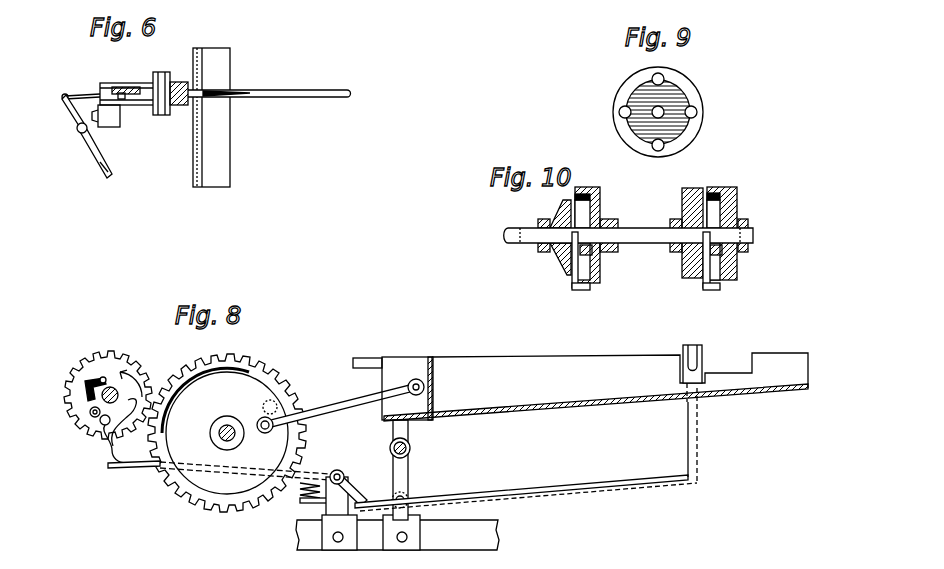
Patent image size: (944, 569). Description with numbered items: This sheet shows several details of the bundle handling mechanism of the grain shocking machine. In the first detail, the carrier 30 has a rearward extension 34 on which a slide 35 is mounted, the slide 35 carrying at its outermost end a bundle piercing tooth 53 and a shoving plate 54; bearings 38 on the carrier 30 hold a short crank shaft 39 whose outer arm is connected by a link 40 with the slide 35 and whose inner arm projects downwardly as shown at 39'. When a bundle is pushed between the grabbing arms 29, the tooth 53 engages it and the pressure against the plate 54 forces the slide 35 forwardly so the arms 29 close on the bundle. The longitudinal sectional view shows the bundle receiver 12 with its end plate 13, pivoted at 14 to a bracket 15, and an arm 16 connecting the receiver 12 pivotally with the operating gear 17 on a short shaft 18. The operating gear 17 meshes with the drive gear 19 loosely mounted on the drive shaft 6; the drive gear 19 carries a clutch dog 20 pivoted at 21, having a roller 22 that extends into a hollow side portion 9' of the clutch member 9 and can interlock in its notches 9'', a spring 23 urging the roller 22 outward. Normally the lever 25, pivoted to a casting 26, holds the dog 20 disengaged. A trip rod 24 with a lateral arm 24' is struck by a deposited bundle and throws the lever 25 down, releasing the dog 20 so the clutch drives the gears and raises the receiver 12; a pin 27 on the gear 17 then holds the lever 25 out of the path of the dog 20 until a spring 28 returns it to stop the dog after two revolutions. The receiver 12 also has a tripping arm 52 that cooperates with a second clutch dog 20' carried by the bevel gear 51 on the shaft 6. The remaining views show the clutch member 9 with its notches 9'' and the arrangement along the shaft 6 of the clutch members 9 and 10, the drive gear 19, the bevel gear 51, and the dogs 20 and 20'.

In FIG. 10, the drive shaft 6 is at (652, 244).
In FIG. 9, the clutch member 9 is at (675, 112).
In FIG. 10, the clutch member 9 is at (724, 215).
In FIG. 10, the hollow side portion 9' is at (754, 223).
In FIG. 9, the notches 9'' is at (682, 106).
In FIG. 10, the notches 9'' is at (715, 175).
In FIG. 10, the clutch member 10 is at (588, 187).
In FIG. 8, the bundle receiver 12 is at (522, 356).
In FIG. 8, the end plate 13 is at (434, 375).
In FIG. 8, the pivot 14 is at (411, 448).
In FIG. 8, the bracket 15 is at (409, 477).
In FIG. 8, the arm 16 is at (340, 406).
In FIG. 8, the operating gear 17 is at (255, 380).
In FIG. 8, the short shaft 18 is at (227, 424).
In FIG. 10, the drive gear 19 is at (695, 280).
In FIG. 8, the drive gear 19 is at (110, 371).
In FIG. 10, the clutch dog 20 is at (718, 273).
In FIG. 8, the clutch dog 20 is at (203, 479).
In FIG. 10, the second clutch dog 20' is at (587, 273).
In FIG. 8, the pivot 21 is at (100, 432).
In FIG. 10, the roller 22 is at (592, 249).
In FIG. 8, the roller 22 is at (90, 414).
In FIG. 8, the spring 23 is at (92, 378).
In FIG. 8, the trip rod 24 is at (526, 447).
In FIG. 8, the lateral arm 24' is at (720, 358).
In FIG. 8, the lever 25 is at (210, 434).
In FIG. 8, the casting 26 is at (352, 486).
In FIG. 8, the pin 27 is at (278, 405).
In FIG. 8, the spring 28 is at (302, 501).
In FIG. 6, the grabbing arms 29 is at (298, 98).
In FIG. 6, the carrier 30 is at (119, 115).
In FIG. 6, the rearward extension 34 is at (125, 84).
In FIG. 6, the slide 35 is at (168, 112).
In FIG. 6, the bearings 38 is at (93, 126).
In FIG. 6, the crank shaft 39 is at (82, 150).
In FIG. 6, the inner arm 39' is at (96, 188).
In FIG. 6, the link 40 is at (92, 84).
In FIG. 10, the bevel gear 51 is at (560, 262).
In FIG. 8, the tripping arm 52 is at (362, 358).
In FIG. 6, the bundle piercing tooth 53 is at (215, 92).
In FIG. 6, the shoving plate 54 is at (221, 53).